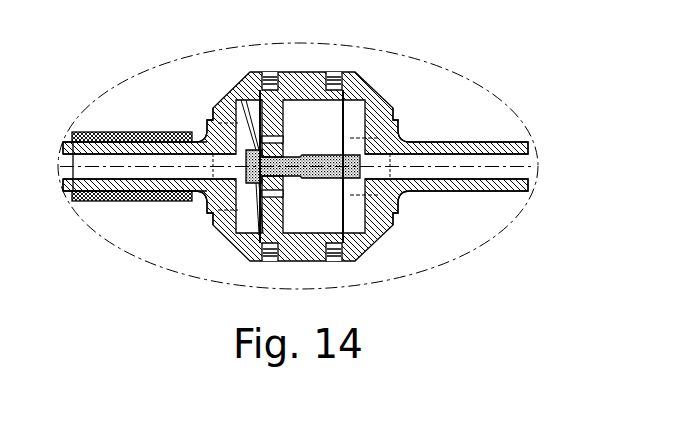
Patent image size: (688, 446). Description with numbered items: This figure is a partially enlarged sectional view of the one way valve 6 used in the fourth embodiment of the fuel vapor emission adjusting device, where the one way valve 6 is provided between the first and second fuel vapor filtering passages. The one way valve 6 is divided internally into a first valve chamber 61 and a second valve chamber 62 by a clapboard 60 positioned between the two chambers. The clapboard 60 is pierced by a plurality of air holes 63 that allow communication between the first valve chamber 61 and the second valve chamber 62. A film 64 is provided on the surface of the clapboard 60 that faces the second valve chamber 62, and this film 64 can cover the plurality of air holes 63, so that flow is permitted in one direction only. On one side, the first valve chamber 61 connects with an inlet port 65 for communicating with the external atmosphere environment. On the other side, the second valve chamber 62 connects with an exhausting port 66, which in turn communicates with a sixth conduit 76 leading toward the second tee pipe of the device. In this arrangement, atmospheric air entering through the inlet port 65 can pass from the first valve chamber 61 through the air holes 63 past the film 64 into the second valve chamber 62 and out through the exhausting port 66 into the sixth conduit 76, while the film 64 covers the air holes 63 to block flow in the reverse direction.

The one way valve 6 is at (375, 70).
The clapboard 60 is at (272, 70).
The first valve chamber 61 is at (400, 127).
The second valve chamber 62 is at (211, 116).
The air holes 63 is at (288, 140).
The film 64 is at (243, 100).
The inlet port 65 is at (407, 166).
The exhausting port 66 is at (212, 168).
The sixth conduit 76 is at (83, 198).